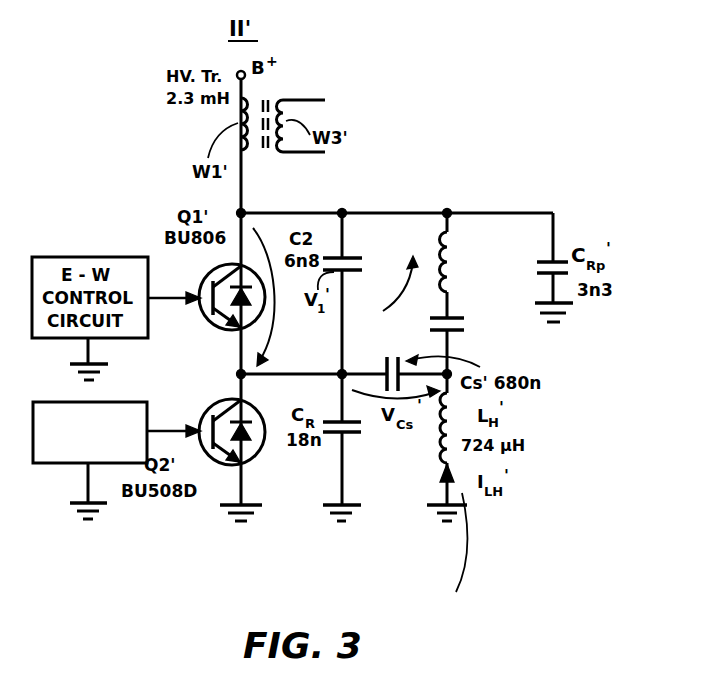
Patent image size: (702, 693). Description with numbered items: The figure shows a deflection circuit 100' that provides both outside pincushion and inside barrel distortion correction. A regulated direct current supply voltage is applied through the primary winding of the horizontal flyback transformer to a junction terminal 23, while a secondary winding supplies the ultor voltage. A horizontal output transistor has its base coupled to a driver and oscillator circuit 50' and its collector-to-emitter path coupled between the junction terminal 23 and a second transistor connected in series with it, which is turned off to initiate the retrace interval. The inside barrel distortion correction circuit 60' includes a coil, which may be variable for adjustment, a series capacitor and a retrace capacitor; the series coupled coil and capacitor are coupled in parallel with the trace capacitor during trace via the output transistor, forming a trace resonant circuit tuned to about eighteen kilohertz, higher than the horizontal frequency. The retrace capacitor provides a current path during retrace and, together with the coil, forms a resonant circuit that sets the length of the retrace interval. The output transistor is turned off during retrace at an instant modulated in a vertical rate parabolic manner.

The junction terminal 23 is at (243, 211).
The inside barrel distortion correction circuit 60' is at (444, 293).
The driver and oscillator circuit 50' is at (111, 460).
The deflection circuit 100' is at (386, 393).